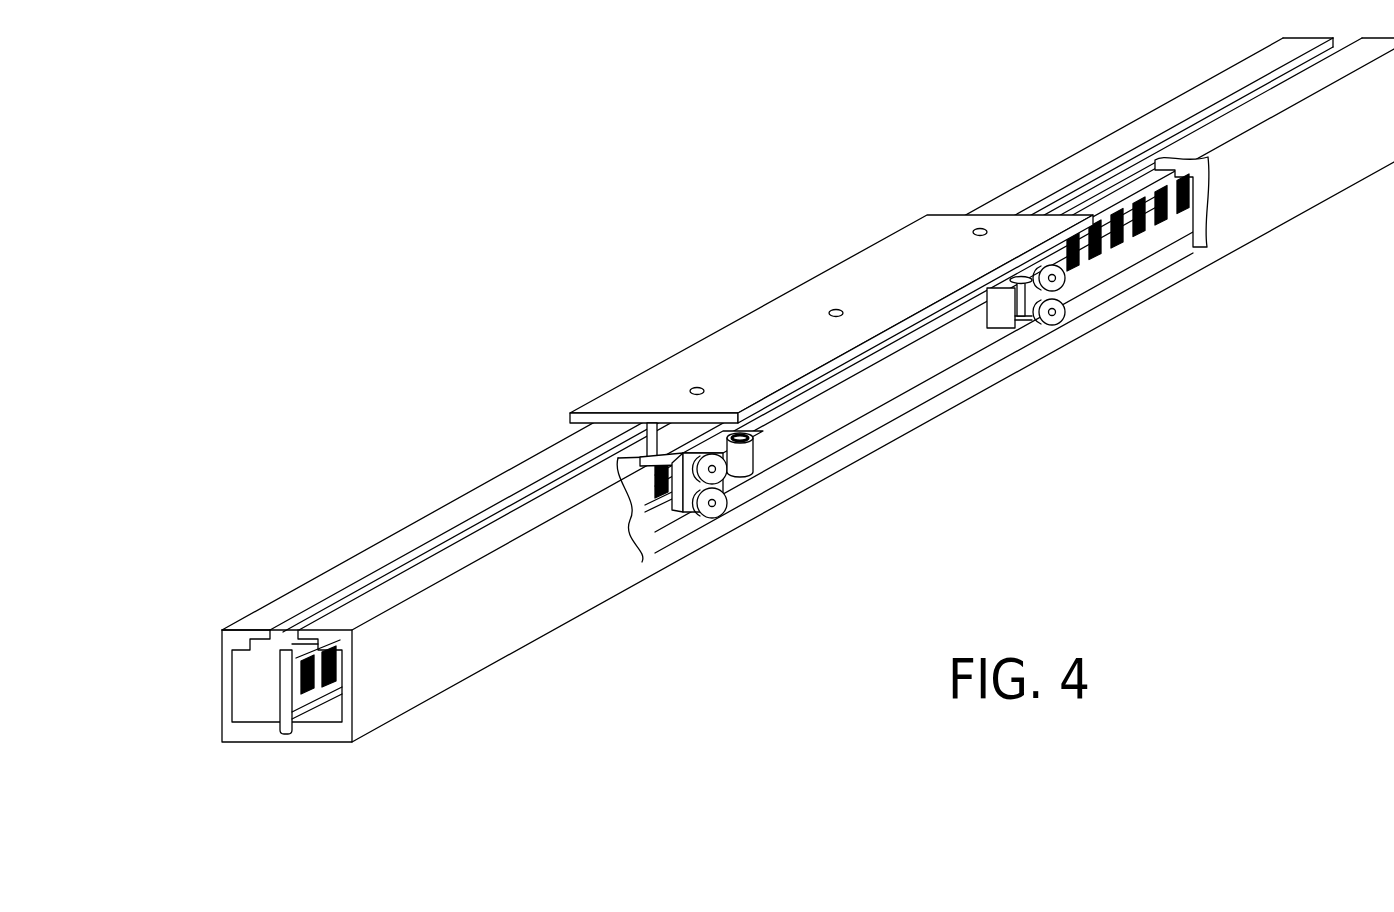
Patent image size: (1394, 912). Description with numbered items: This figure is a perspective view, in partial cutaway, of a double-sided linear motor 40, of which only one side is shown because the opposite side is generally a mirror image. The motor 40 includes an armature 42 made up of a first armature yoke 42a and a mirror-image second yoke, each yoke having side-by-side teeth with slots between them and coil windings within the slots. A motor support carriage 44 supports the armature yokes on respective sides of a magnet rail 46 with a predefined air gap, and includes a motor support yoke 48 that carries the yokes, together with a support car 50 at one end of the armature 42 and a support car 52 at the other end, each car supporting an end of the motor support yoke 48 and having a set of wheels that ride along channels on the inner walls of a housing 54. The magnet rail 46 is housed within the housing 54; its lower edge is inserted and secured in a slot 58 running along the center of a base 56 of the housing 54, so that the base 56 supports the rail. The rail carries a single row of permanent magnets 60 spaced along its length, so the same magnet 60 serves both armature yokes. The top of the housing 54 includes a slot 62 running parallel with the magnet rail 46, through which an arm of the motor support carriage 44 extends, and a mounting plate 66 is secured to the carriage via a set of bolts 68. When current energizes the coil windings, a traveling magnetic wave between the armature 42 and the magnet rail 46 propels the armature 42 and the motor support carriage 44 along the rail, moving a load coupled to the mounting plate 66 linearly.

The double-sided linear motor 40 is at (759, 427).
The armature 42 is at (808, 390).
The first armature yoke 42a is at (916, 374).
The motor support carriage 44 is at (1044, 383).
The magnet rail 46 is at (280, 687).
The motor support yoke 48 is at (752, 508).
The support car 50 is at (734, 524).
The support car 52 is at (1086, 299).
The housing 54 is at (267, 620).
The base 56 is at (317, 735).
The slot 58 is at (262, 712).
The permanent magnets 60 is at (337, 706).
The slot 62 is at (351, 584).
The mounting plate 66 is at (831, 282).
The bolts 68 is at (968, 230).